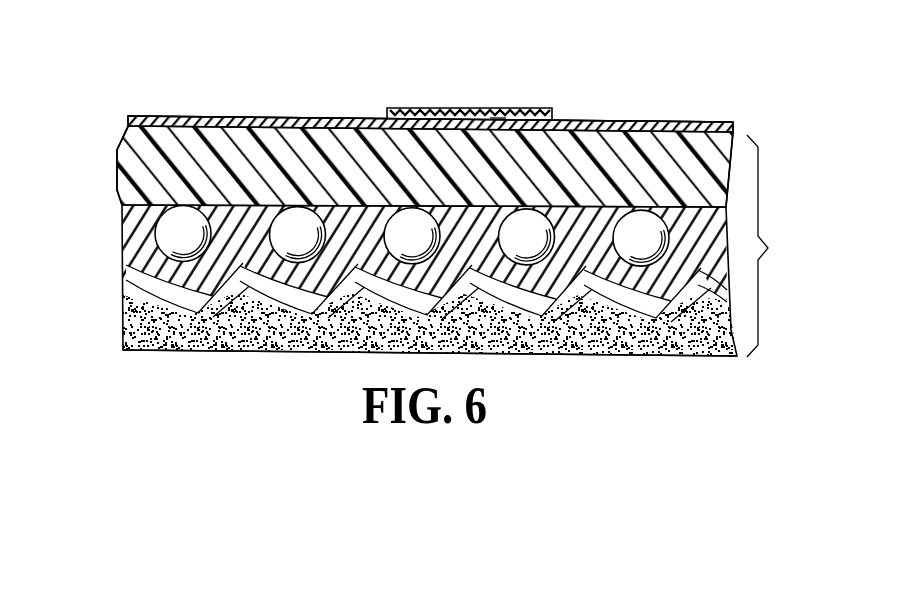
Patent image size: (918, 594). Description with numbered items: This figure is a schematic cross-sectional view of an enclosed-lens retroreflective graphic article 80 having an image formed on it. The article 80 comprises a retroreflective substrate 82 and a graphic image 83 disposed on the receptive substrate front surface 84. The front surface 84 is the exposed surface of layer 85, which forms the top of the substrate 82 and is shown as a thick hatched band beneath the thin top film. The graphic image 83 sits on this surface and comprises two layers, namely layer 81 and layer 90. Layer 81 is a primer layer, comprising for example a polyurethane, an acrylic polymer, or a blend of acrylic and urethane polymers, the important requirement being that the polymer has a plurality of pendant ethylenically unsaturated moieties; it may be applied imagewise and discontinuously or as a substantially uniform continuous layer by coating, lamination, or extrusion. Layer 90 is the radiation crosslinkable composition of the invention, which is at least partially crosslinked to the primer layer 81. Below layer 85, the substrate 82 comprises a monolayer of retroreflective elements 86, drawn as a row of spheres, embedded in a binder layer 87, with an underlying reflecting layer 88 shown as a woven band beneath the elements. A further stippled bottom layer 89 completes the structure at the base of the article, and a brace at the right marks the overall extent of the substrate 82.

The article 80 is at (689, 105).
The primer layer 81 is at (128, 121).
The retroreflective substrate 82 is at (779, 246).
The graphic image 83 is at (440, 110).
The receptive substrate front surface 84 is at (233, 118).
The layer 85 is at (132, 152).
The retroreflective elements 86 is at (633, 233).
The binder layer 87 is at (132, 228).
The reflecting layer 88 is at (137, 276).
The bottom layer 89 is at (195, 338).
The radiation crosslinkable composition layer 90 is at (497, 112).